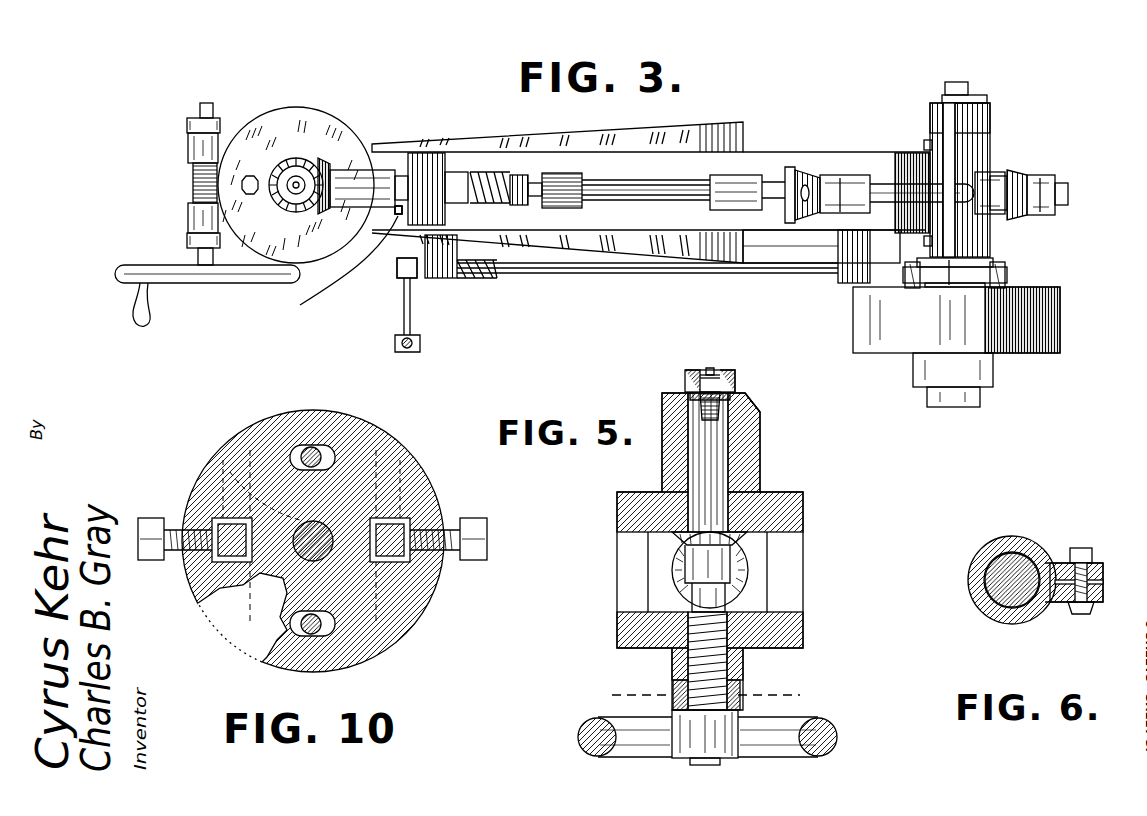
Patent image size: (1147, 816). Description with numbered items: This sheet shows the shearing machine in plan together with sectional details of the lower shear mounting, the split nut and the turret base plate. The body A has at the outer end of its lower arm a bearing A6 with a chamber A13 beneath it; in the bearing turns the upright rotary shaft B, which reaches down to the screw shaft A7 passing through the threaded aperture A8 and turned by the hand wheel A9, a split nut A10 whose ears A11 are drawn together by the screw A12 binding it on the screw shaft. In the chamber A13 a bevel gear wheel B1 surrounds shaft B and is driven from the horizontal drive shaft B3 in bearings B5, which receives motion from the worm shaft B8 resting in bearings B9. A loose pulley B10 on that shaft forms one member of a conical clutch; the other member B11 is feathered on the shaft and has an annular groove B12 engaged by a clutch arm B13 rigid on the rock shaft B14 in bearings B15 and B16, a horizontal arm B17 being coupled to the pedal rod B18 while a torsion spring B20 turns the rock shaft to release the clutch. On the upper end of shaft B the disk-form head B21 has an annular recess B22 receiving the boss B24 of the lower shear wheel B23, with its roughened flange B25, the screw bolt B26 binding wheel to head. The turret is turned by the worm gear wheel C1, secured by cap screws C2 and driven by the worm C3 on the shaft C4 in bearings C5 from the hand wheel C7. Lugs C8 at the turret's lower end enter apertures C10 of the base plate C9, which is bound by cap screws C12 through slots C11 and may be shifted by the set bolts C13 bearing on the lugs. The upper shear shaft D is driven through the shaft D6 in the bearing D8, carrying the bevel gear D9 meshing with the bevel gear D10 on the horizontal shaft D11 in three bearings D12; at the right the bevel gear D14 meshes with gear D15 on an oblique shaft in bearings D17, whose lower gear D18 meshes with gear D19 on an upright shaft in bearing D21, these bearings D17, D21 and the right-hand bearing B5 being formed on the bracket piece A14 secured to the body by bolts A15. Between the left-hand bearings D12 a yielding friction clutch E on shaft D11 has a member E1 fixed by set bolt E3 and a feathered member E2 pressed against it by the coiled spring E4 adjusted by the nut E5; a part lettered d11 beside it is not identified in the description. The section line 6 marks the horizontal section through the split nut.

In FIG. 3, the body of the machine A is at (710, 125).
In FIG. 5, the bearing A6 is at (760, 450).
In FIG. 5, the screw shaft A7 is at (690, 762).
In FIG. 6, the screw shaft A7 is at (1015, 555).
In FIG. 5, the threaded aperture A8 is at (803, 630).
In FIG. 5, the hand wheel A9 is at (838, 737).
In FIG. 5, the split nut A10 is at (740, 712).
In FIG. 6, the split nut A10 is at (975, 560).
In FIG. 6, the ears A11 is at (1103, 580).
In FIG. 6, the screw A12 is at (1078, 609).
In FIG. 5, the chamber A13 is at (760, 568).
In FIG. 3, the bracket piece A14 is at (926, 140).
In FIG. 3, the bolts A15 is at (900, 238).
In FIG. 5, the upright rotary shaft B is at (710, 470).
In FIG. 5, the bevel gear wheel B1 is at (745, 538).
In FIG. 3, the horizontal drive shaft B3 is at (1045, 190).
In FIG. 3, the bearings B5 is at (1015, 185).
In FIG. 3, the worm shaft B8 is at (955, 82).
In FIG. 3, the bearings B9 is at (985, 170).
In FIG. 3, the loose pulley B10 is at (1045, 330).
In FIG. 3, the clutch member B11 is at (952, 285).
In FIG. 3, the annular groove B12 is at (930, 287).
In FIG. 3, the clutch arm B13 is at (1005, 275).
In FIG. 3, the rock shaft B14 is at (622, 274).
In FIG. 3, the bearing B15 is at (848, 260).
In FIG. 3, the bearing B16 is at (440, 279).
In FIG. 3, the horizontal arm B17 is at (404, 323).
In FIG. 3, the pedal rod B18 is at (412, 348).
In FIG. 3, the torsion spring B20 is at (480, 279).
In FIG. 5, the disk-form head B21 is at (750, 400).
In FIG. 5, the annular recess B22 is at (730, 372).
In FIG. 5, the lower shear wheel B23 is at (709, 368).
In FIG. 5, the annular boss B24 is at (688, 386).
In FIG. 5, the annular flange B25 is at (690, 375).
In FIG. 5, the screw bolt B26 is at (715, 375).
In FIG. 3, the worm gear wheel C1 is at (288, 117).
In FIG. 3, the cap screws C2 is at (250, 176).
In FIG. 3, the worm C3 is at (193, 185).
In FIG. 3, the worm shaft C4 is at (205, 103).
In FIG. 3, the bearings C5 is at (188, 147).
In FIG. 3, the hand wheel C7 is at (120, 278).
In FIG. 10, the lugs C8 is at (215, 470).
In FIG. 10, the base plate C9 is at (270, 460).
In FIG. 10, the apertures C10 is at (232, 518).
In FIG. 10, the slots C11 is at (278, 452).
In FIG. 10, the cap screw C12 is at (311, 447).
In FIG. 10, the set bolt C13 is at (152, 518).
In FIG. 10, the shaft D is at (318, 530).
In FIG. 3, the shaft D6 is at (296, 185).
In FIG. 3, the bearing D8 is at (322, 158).
In FIG. 3, the bevel gear wheel D9 is at (275, 160).
In FIG. 3, the bevel gear wheel D10 is at (345, 170).
In FIG. 3, the horizontal shaft D11 is at (600, 182).
In FIG. 3, the pin d11 is at (398, 206).
In FIG. 3, the bearings D12 is at (404, 176).
In FIG. 3, the bevel gear wheel D14 is at (800, 170).
In FIG. 3, the bevel gear wheel D15 is at (835, 180).
In FIG. 3, the bearings D17 is at (845, 176).
In FIG. 3, the bevel gear D18 is at (1020, 215).
In FIG. 3, the bevel gear D19 is at (1055, 200).
In FIG. 3, the bearing D21 is at (1068, 193).
In FIG. 3, the yielding friction clutch E is at (493, 195).
In FIG. 3, the clutch member E1 is at (380, 232).
In FIG. 3, the clutch member E2 is at (398, 258).
In FIG. 3, the set bolt E3 is at (400, 213).
In FIG. 3, the coiled spring E4 is at (478, 172).
In FIG. 3, the nut E5 is at (488, 172).
In FIG. 5, the section line 6 is at (705, 693).